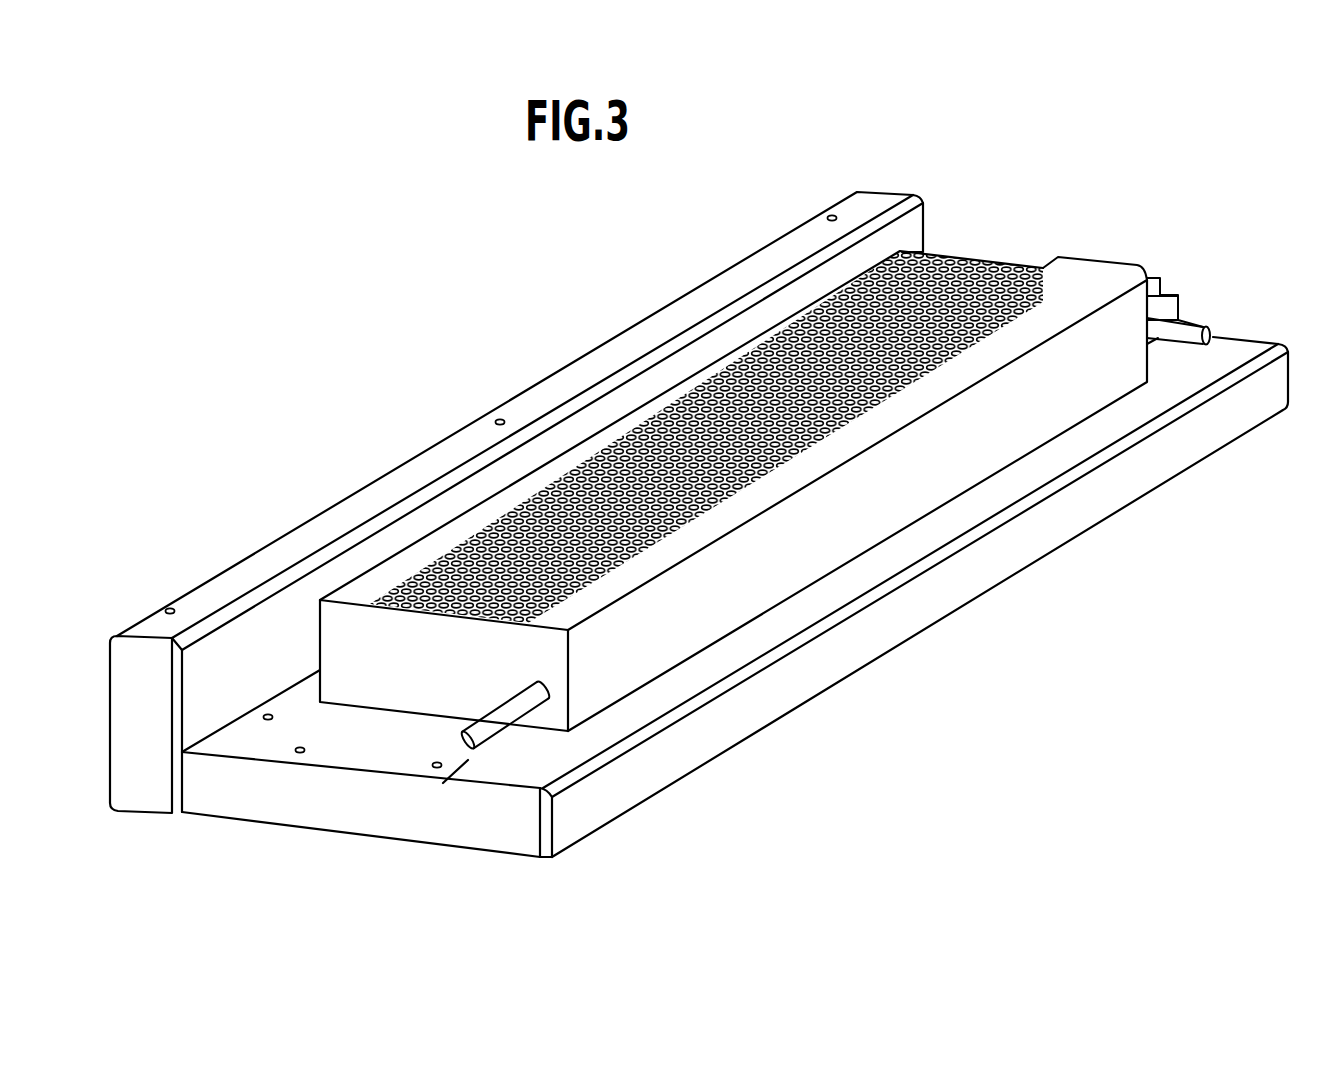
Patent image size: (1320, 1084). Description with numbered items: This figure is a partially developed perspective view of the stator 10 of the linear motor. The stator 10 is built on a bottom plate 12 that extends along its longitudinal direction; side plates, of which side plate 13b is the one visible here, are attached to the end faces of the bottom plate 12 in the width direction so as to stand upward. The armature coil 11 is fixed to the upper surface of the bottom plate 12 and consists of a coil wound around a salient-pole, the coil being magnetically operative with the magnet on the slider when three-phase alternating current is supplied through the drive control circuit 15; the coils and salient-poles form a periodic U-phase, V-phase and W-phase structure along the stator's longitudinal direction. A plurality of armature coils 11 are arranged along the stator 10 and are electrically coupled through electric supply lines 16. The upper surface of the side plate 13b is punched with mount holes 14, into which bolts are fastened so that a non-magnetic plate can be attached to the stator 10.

The stator 10 is at (1202, 152).
The armature coil 11 is at (962, 457).
The bottom plate 12 is at (395, 818).
The side plate 13b is at (887, 200).
The mount hole 14 is at (171, 605).
The drive control circuit 15 is at (1117, 265).
The electric supply line 16 is at (503, 720).